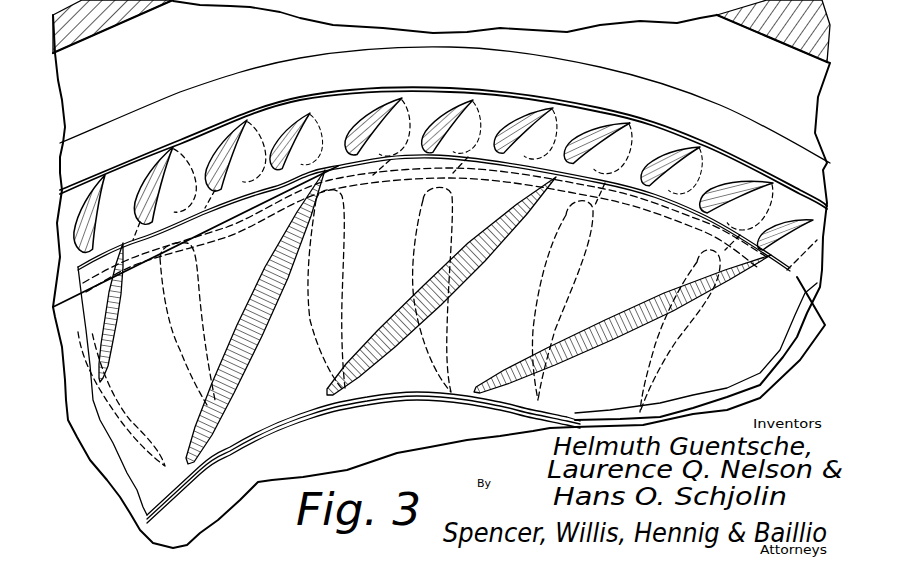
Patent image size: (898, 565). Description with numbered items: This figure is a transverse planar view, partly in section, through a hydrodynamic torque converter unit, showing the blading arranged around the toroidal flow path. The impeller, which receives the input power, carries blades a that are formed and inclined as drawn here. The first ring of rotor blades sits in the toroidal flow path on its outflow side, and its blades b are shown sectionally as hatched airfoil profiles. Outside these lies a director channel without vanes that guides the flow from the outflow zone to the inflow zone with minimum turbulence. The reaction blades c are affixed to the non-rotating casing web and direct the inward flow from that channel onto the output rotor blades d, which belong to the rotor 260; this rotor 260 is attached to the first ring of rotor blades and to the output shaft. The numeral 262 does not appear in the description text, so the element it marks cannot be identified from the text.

The rotor 260 is at (152, 527).
The outer ring (casing) 262 is at (150, 123).
The blades a is at (247, 337).
The blades b is at (89, 190).
The reaction blades c is at (233, 150).
The output rotor blades d is at (187, 336).